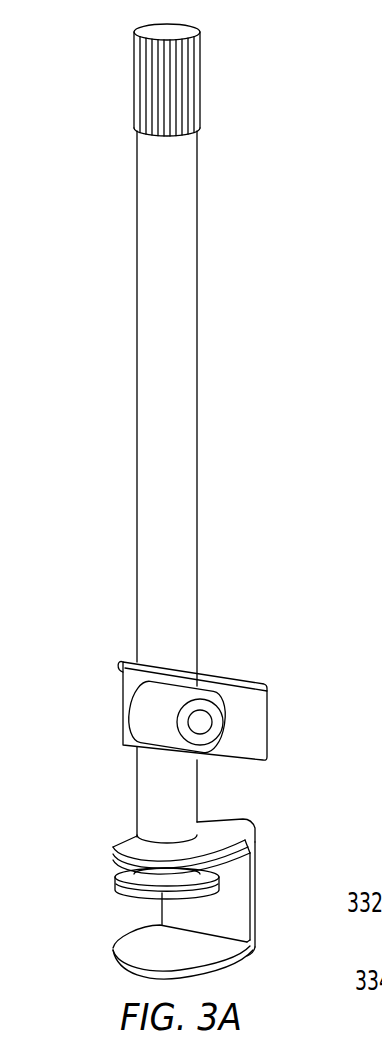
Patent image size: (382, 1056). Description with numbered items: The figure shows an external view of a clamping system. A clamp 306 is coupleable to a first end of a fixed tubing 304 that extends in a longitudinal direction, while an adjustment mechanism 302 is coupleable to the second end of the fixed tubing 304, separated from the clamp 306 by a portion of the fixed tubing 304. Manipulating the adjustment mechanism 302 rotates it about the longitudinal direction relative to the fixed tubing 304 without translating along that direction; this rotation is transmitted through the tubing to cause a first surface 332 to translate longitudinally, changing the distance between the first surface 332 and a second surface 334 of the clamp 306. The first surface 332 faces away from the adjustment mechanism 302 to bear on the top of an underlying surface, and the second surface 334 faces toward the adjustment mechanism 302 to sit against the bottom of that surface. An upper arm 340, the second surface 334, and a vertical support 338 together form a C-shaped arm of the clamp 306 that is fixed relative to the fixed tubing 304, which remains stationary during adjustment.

The adjustment mechanism 302 is at (200, 63).
The fixed tubing 304 is at (197, 225).
The clamp 306 is at (195, 884).
The first surface 332 is at (110, 882).
The second surface 334 is at (115, 943).
The vertical support 338 is at (250, 907).
The upper arm 340 is at (203, 822).